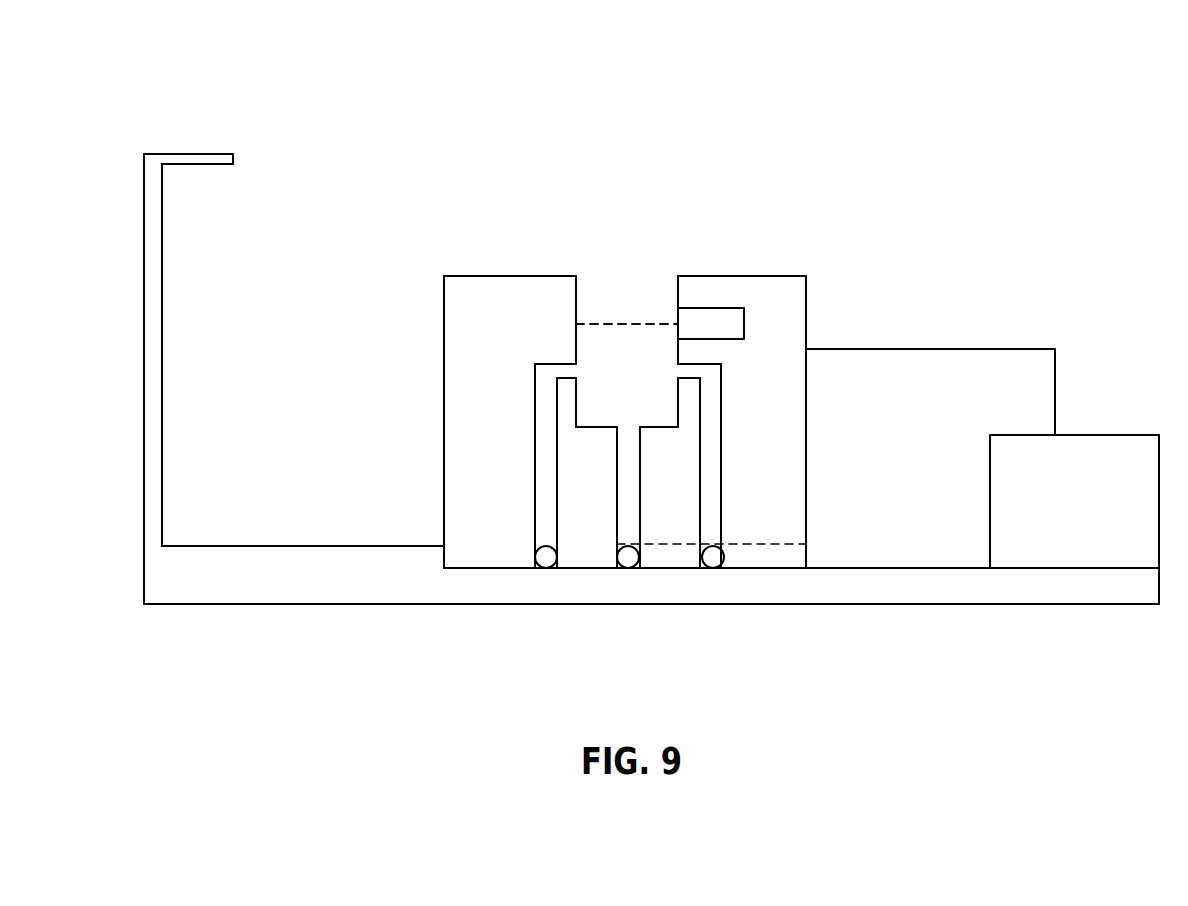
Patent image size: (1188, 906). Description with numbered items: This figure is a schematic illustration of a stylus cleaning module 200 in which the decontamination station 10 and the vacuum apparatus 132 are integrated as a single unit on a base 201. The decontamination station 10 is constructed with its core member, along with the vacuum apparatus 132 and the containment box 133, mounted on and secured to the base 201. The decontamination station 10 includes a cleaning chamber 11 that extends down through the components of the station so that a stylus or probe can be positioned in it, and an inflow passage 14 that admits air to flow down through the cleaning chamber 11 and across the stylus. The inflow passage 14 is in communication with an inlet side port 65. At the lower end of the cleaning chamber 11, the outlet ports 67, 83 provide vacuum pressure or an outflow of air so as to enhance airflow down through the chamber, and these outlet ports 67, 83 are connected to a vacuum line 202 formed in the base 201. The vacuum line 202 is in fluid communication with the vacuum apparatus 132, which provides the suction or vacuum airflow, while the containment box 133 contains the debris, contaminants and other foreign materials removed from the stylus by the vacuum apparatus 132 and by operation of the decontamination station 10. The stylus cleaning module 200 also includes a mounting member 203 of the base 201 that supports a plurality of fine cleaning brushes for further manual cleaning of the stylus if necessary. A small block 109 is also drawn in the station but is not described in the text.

The stylus cleaning module 200 is at (365, 97).
The mounting member 203 is at (189, 158).
The base 201 is at (296, 546).
The vacuum line 202 is at (778, 570).
The decontamination station 10 is at (442, 277).
The cleaning chamber 11 is at (623, 289).
The retention block 109 is at (710, 308).
The inflow passage 14 is at (533, 423).
The inlet side port 65 is at (546, 560).
The outlet port 67 is at (628, 560).
The outlet port 83 is at (621, 610).
The vacuum apparatus 132 is at (867, 349).
The containment box 133 is at (1116, 435).